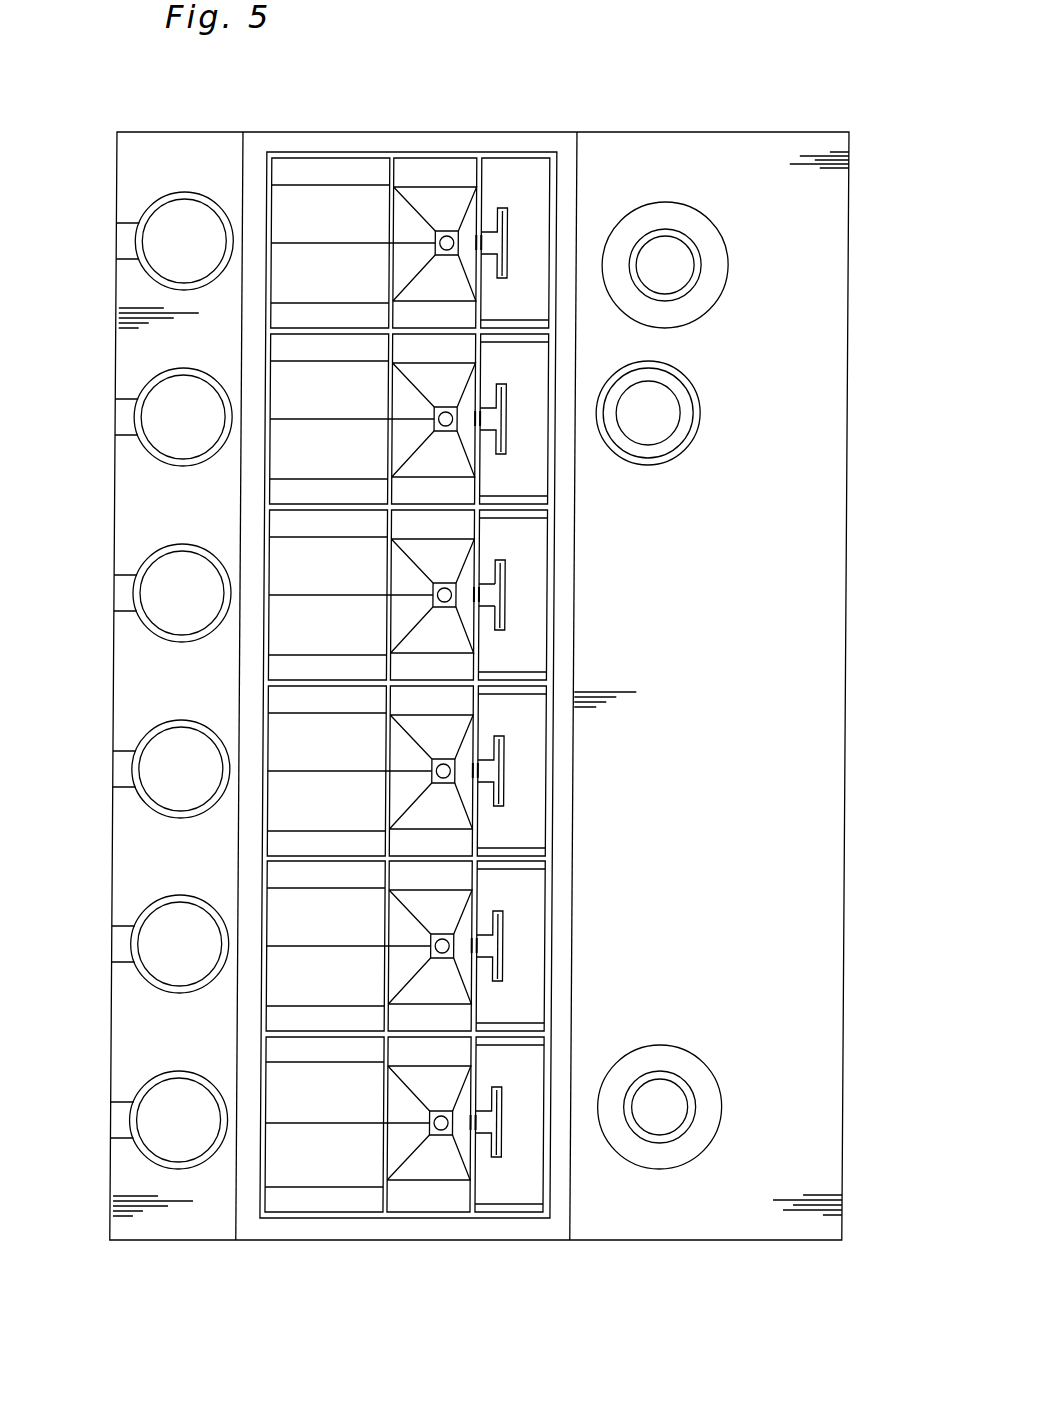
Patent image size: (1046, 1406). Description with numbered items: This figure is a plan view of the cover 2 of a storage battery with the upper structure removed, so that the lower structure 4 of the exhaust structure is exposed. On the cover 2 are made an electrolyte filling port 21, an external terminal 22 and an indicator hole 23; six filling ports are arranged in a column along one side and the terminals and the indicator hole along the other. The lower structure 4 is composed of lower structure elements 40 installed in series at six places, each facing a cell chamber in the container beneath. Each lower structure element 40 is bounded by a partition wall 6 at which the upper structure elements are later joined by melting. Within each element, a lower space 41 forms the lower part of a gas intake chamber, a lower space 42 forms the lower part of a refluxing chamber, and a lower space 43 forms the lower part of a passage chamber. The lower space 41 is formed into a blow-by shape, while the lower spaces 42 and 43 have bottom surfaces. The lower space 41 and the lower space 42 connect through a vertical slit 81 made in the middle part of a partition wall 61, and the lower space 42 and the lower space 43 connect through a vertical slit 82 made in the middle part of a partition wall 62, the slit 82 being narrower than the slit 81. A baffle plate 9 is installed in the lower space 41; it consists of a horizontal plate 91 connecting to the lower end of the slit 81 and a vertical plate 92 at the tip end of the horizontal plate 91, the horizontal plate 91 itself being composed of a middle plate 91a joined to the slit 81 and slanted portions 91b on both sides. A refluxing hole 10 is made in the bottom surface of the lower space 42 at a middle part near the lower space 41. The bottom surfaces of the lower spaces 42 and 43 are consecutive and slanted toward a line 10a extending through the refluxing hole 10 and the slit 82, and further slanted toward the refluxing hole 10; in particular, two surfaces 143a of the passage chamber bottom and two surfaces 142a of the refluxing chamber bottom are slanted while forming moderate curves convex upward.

The cover 2 is at (515, 130).
The lower structure 4 is at (376, 150).
The partition wall 6 is at (559, 1008).
The baffle plate 9 is at (683, 682).
The refluxing hole 10 is at (451, 765).
The line 10a is at (330, 947).
The electrolyte filling port 21 is at (178, 397).
The external terminal 22 is at (676, 257).
The indicator hole 23 is at (662, 415).
The lower structure element 40 is at (562, 207).
The lower space 41 is at (535, 532).
The lower space 42 is at (543, 683).
The lower space 43 is at (215, 685).
The partition wall 61 is at (486, 818).
The partition wall 62 is at (394, 793).
The vertical slit 81 is at (479, 771).
The vertical slit 82 is at (289, 683).
The horizontal plate 91 is at (653, 682).
The middle plate 91a is at (490, 593).
The slanted portions 91b is at (491, 573).
The vertical plate 92 is at (511, 623).
The surfaces 142a is at (408, 922).
The surfaces 143a is at (297, 913).